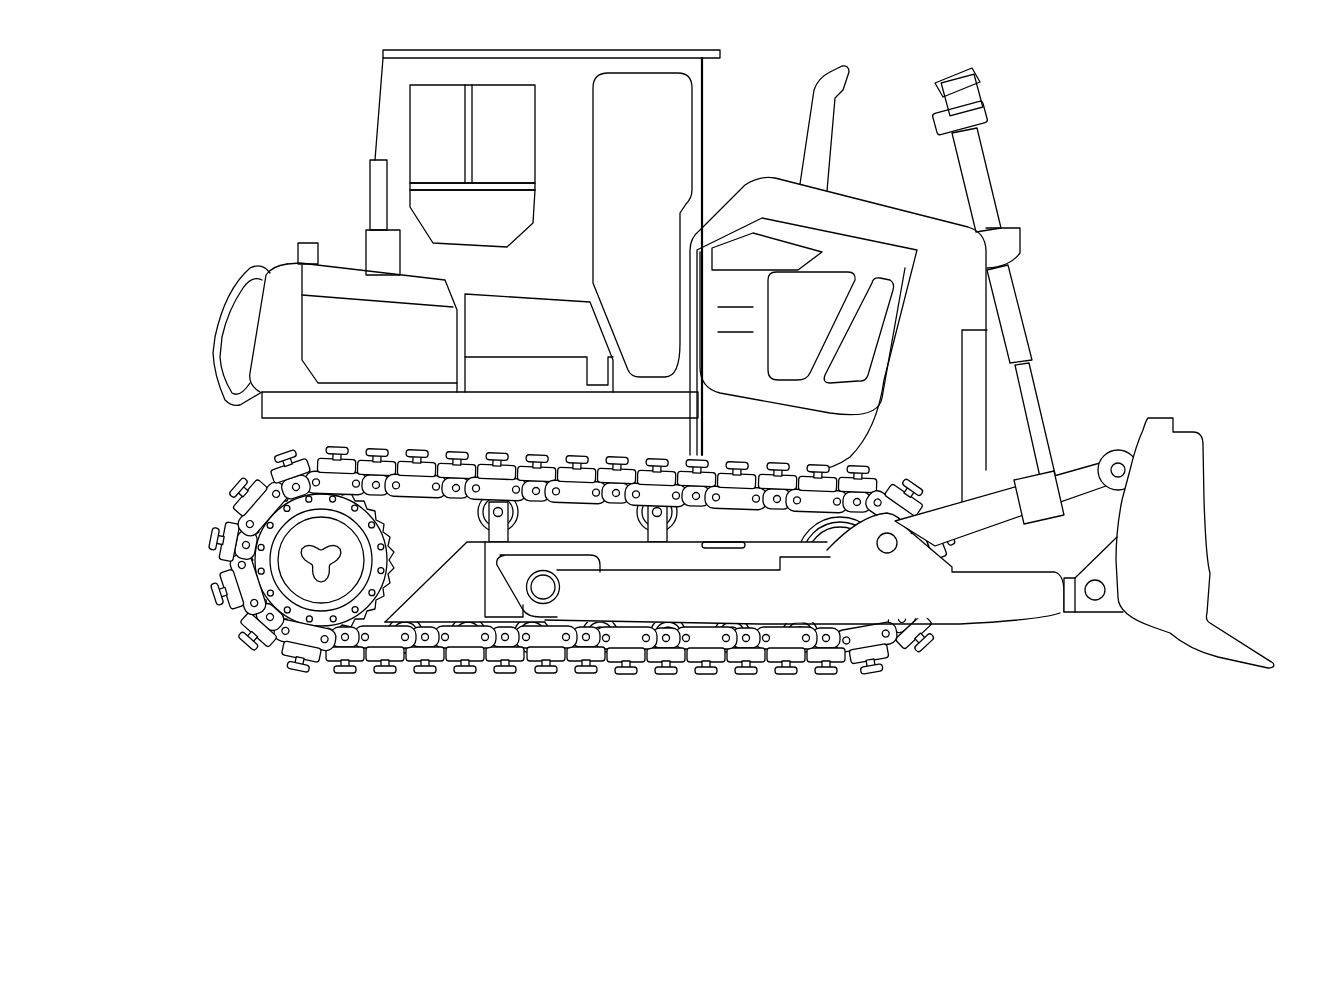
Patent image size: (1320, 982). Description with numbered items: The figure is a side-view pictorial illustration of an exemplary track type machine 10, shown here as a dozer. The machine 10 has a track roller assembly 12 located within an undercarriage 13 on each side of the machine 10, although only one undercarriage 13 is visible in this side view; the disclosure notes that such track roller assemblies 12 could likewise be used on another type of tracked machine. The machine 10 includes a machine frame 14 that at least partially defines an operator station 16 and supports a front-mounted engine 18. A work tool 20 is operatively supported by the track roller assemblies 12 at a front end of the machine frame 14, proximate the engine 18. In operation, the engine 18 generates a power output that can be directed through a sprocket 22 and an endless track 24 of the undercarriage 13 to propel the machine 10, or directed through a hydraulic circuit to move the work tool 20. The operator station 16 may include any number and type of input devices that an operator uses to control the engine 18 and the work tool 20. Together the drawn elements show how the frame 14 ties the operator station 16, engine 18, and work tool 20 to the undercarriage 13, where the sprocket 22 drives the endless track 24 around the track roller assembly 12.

The track type machine 10 is at (705, 448).
The track roller assembly 12 is at (705, 417).
The undercarriage 13 is at (550, 578).
The machine frame 14 is at (570, 578).
The operator station 16 is at (660, 110).
The engine 18 is at (838, 282).
The work tool 20 is at (1173, 561).
The sprocket 22 is at (297, 587).
The endless track 24 is at (352, 672).